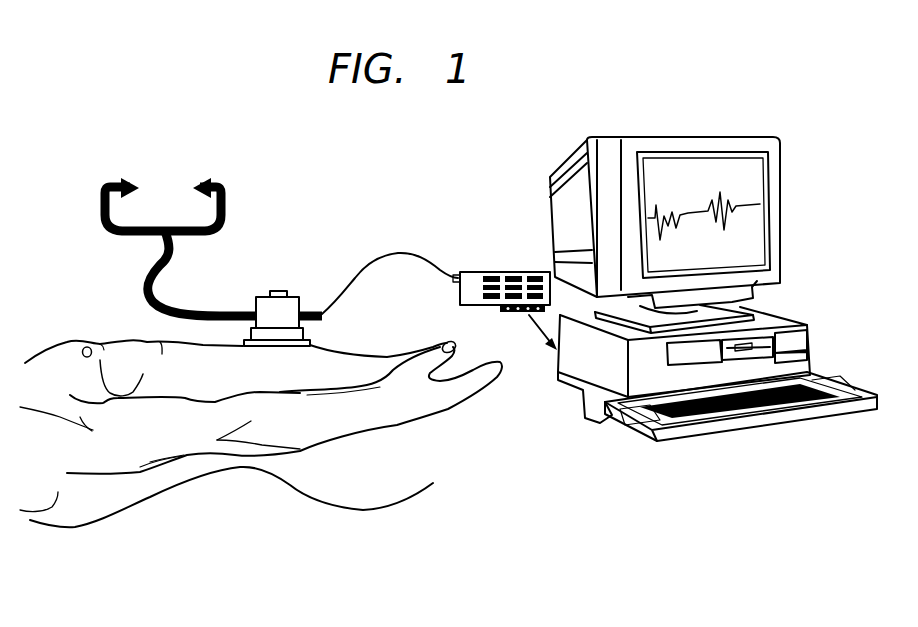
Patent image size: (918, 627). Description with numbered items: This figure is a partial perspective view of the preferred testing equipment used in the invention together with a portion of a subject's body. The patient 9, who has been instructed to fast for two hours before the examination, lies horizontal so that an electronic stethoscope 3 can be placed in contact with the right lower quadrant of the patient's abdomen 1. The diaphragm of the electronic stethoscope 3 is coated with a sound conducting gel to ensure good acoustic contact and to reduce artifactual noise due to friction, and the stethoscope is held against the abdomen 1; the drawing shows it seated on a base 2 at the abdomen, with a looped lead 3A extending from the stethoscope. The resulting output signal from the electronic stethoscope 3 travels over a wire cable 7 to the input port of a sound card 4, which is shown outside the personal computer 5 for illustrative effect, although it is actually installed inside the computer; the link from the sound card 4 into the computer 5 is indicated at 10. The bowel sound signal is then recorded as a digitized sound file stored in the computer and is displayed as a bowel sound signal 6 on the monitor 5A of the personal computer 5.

The abdomen 1 is at (303, 387).
The adhesive base / mounting pad 2 is at (307, 343).
The electronic stethoscope 3 is at (280, 290).
The cable loop 3A is at (127, 181).
The sound card 4 is at (507, 273).
The personal computer 5 is at (623, 440).
The monitor 5A is at (740, 180).
The bowel sound signal 6 is at (700, 200).
The wire cable 7 is at (357, 277).
The patient 9 is at (127, 530).
The data connection 10 is at (522, 353).